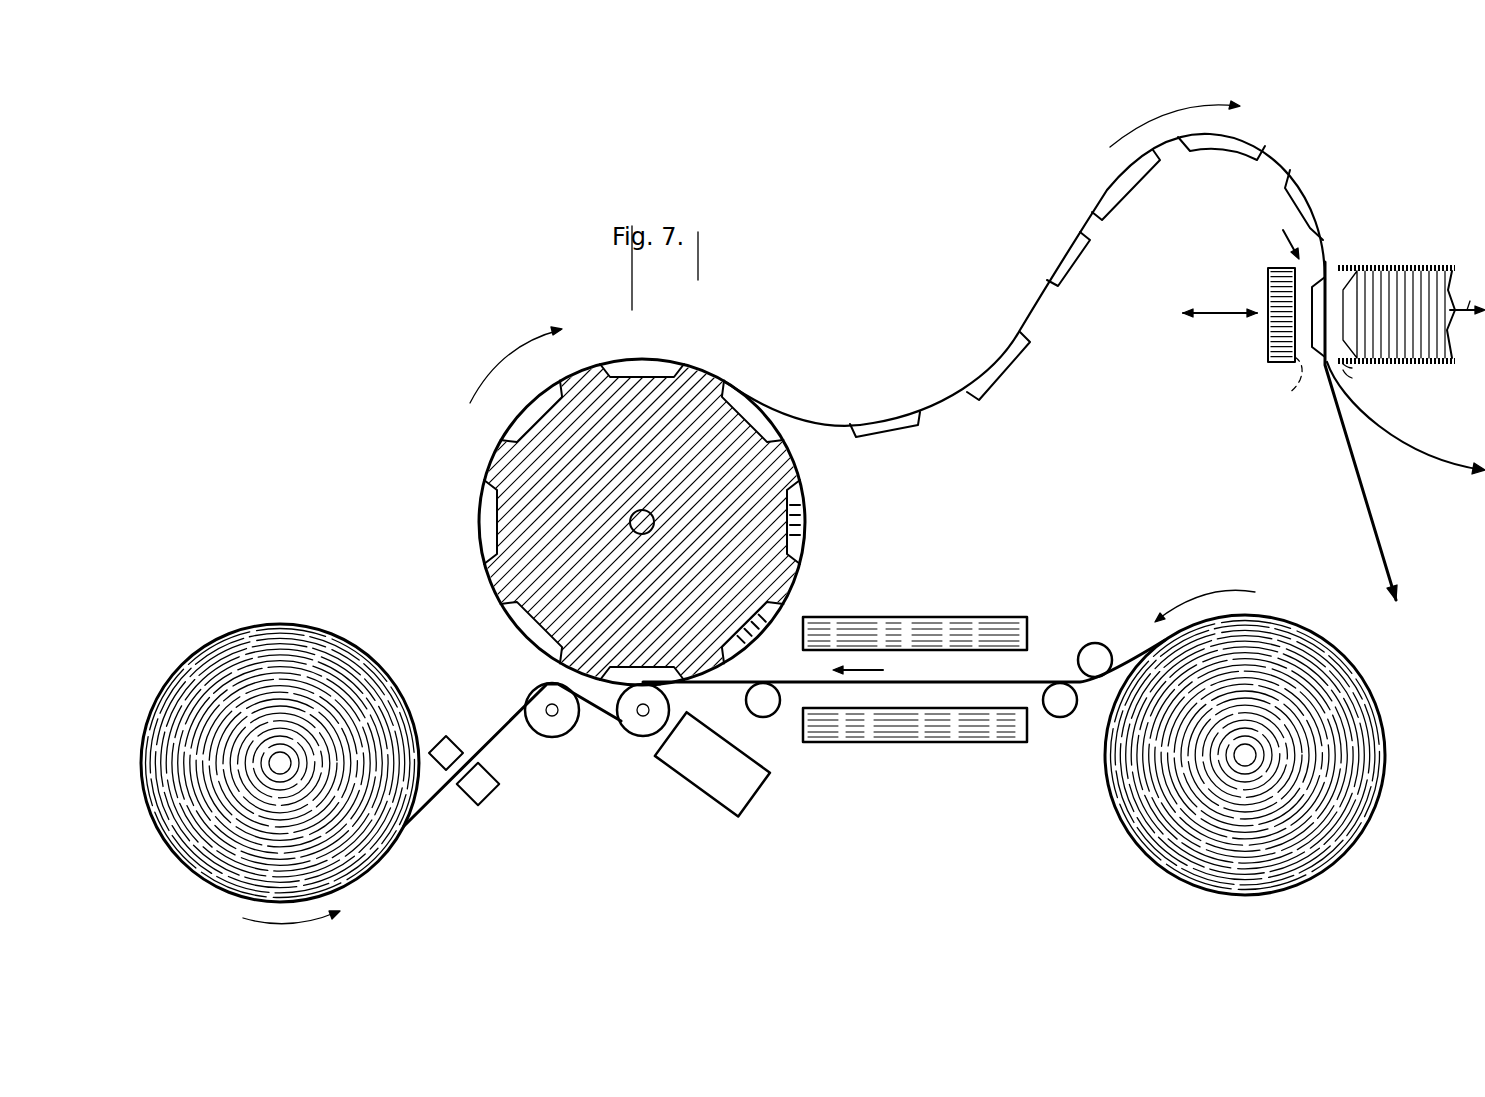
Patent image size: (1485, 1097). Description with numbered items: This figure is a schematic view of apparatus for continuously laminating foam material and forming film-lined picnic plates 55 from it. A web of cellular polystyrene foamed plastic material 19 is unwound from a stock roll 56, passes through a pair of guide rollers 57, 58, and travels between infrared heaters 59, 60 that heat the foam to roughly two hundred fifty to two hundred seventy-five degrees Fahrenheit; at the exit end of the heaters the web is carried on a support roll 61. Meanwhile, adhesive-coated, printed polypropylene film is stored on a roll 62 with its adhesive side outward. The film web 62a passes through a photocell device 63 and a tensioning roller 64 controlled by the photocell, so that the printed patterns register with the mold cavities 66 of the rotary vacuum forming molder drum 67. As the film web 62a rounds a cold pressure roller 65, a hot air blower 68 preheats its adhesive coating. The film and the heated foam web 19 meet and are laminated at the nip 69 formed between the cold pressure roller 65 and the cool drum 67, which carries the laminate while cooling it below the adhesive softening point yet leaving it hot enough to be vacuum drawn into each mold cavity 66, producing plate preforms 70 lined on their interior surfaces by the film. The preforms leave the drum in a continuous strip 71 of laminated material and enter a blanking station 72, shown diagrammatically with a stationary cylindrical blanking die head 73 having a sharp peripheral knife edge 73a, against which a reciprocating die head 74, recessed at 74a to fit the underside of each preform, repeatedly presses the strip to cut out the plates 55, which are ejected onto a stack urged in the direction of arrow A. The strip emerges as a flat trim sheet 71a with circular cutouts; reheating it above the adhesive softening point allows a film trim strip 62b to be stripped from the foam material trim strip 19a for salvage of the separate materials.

The web of cellular polystyrene foamed plastic material 19 is at (1033, 678).
The foam material trim strip 19a is at (1363, 495).
The plates 55 is at (1366, 268).
The stock roll 56 is at (1360, 810).
The guide roller 57 is at (1097, 645).
The guide roller 58 is at (1062, 715).
The infrared heater 59 is at (923, 623).
The infrared heater 60 is at (902, 735).
The support roll 61 is at (762, 708).
The roll of film 62 is at (363, 668).
The film web 62a is at (420, 818).
The film trim strip 62b is at (1417, 458).
The photocell device 63 is at (493, 777).
The tensioning roller 64 is at (537, 695).
The cold pressure roller 65 is at (635, 725).
The mold cavities 66 is at (493, 553).
The rotary vacuum forming molder drum 67 is at (527, 470).
The hot air blower 68 is at (717, 785).
The nip 69 is at (667, 687).
The plate preforms 70 is at (850, 435).
The continuous strip of laminated material 71 is at (833, 418).
The trim sheet 71a is at (1323, 368).
The blanking station 72 is at (1276, 233).
The stationary cylindrical blanking die head 73 is at (1337, 365).
The peripheral knife edge 73a is at (1337, 370).
The reciprocating die head 74 is at (1270, 343).
The recess 74a is at (1275, 387).